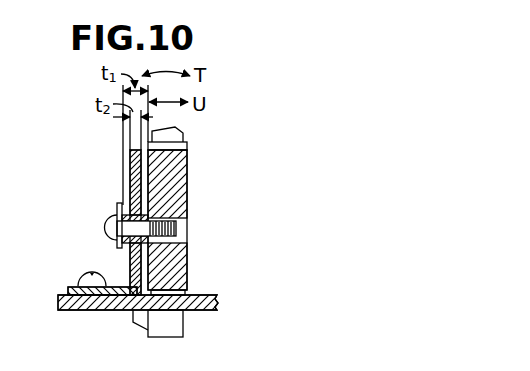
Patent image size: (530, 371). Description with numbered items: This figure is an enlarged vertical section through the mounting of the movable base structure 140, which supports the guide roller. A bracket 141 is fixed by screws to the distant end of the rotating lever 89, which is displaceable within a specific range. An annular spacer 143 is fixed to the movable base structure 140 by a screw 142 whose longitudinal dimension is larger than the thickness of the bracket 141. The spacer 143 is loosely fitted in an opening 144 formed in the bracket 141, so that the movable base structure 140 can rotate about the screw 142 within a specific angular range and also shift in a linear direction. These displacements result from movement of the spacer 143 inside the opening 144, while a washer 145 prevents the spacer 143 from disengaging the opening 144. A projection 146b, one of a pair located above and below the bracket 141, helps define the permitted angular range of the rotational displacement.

The movable base structure 140 is at (181, 159).
The screw 142 is at (185, 228).
The opening 144 is at (146, 240).
The washer 145 is at (117, 205).
The annular spacer 143 is at (122, 250).
The bracket 141 is at (72, 292).
The rotating lever 89 is at (65, 299).
The projection 146b is at (134, 316).